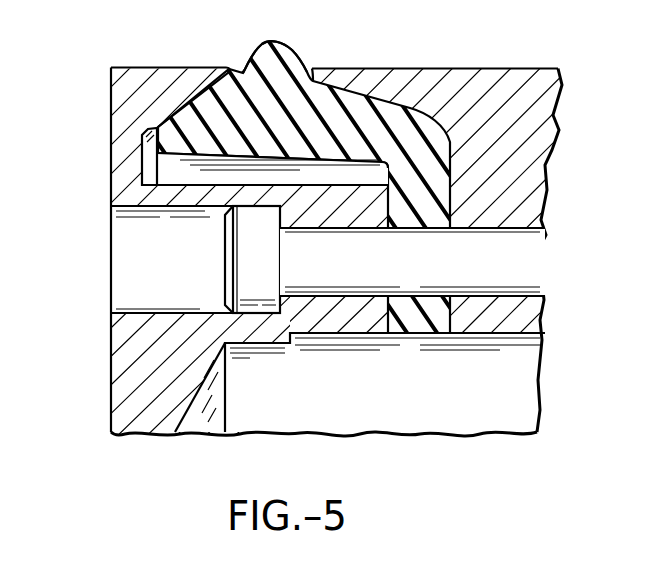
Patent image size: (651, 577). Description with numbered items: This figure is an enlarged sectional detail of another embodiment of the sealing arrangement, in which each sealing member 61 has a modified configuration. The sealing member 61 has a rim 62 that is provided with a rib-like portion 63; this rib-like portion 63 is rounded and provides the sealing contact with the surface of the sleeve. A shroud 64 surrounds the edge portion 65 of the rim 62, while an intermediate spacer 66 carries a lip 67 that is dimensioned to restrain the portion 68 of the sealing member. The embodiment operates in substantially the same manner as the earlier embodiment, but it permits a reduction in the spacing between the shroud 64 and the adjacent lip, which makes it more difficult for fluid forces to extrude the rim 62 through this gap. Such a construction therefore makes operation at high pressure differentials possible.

The sealing member 61 is at (190, 159).
The rim 62 is at (229, 209).
The rib-like portion 63 is at (284, 56).
The shroud 64 is at (163, 80).
The edge portion 65 is at (173, 137).
The intermediate spacer 66 is at (513, 86).
The lip 67 is at (343, 77).
The portion 68 is at (345, 118).